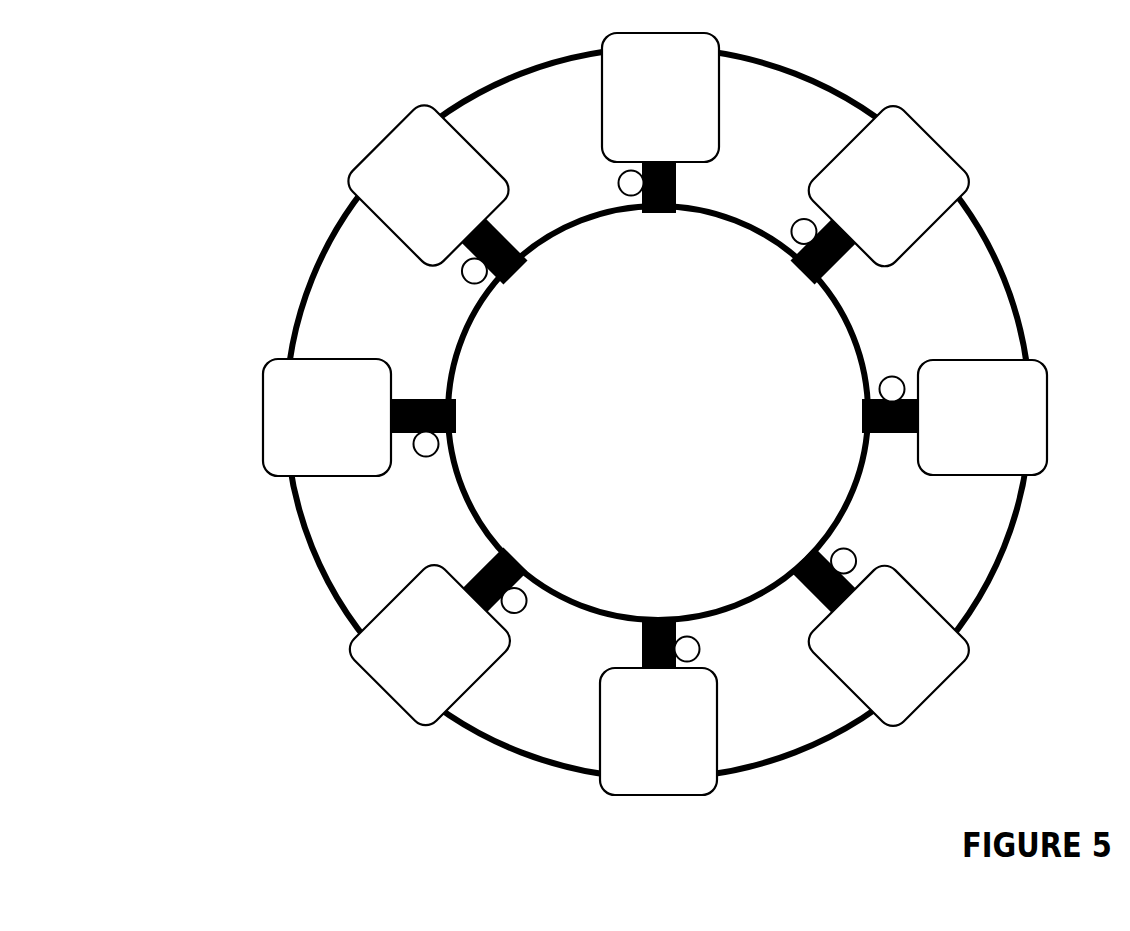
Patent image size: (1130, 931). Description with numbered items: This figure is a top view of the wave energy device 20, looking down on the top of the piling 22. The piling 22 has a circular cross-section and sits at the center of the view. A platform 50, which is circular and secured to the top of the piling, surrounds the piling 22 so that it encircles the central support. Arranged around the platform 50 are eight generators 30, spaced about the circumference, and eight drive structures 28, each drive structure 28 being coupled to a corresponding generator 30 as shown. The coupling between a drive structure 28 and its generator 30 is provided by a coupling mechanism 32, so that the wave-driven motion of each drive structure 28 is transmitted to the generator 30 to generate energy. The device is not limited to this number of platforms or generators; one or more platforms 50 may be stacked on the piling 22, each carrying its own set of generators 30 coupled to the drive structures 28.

The wave energy device 20 is at (284, 92).
The piling 22 is at (668, 402).
The drive structure 28 is at (996, 316).
The generator 30 is at (1015, 380).
The coupling mechanism 32 is at (960, 519).
The platform 50 is at (962, 257).